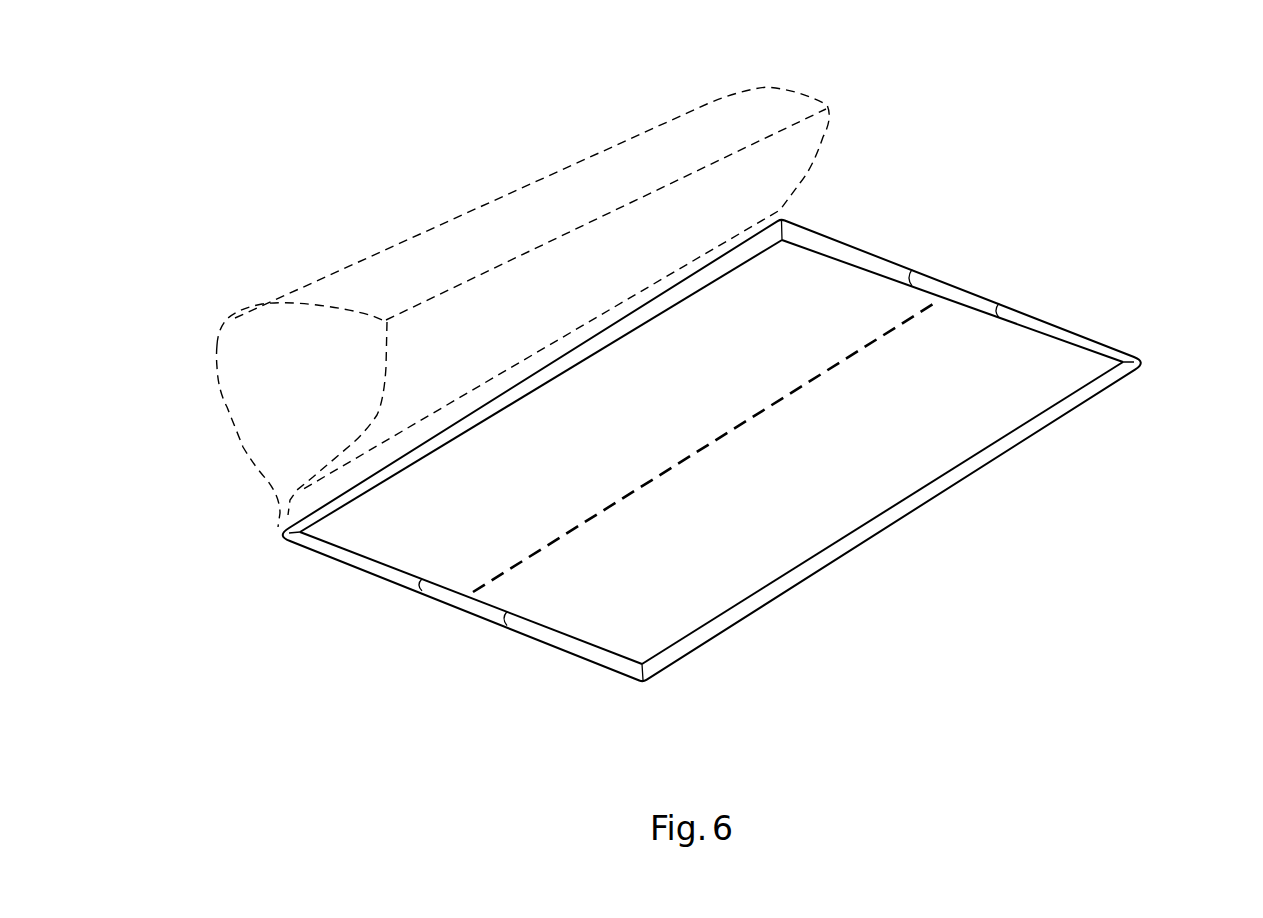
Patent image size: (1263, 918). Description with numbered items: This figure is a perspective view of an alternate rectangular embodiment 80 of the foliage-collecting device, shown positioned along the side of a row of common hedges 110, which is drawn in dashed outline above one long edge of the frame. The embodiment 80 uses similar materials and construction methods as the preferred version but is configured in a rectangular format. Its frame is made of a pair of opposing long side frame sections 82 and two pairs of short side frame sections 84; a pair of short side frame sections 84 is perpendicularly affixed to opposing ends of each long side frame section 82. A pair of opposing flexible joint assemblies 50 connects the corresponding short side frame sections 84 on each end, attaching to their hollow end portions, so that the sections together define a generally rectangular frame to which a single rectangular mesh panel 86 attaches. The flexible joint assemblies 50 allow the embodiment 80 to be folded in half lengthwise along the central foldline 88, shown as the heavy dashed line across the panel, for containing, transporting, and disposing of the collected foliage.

The alternate rectangular embodiment 80 is at (1035, 145).
The long side frame section 82 is at (698, 277).
The short side frame section 84 is at (858, 253).
The flexible joint assembly 50 is at (955, 287).
The rectangular mesh panel 86 is at (968, 420).
The central foldline 88 is at (750, 417).
The row of common hedges 110 is at (377, 248).